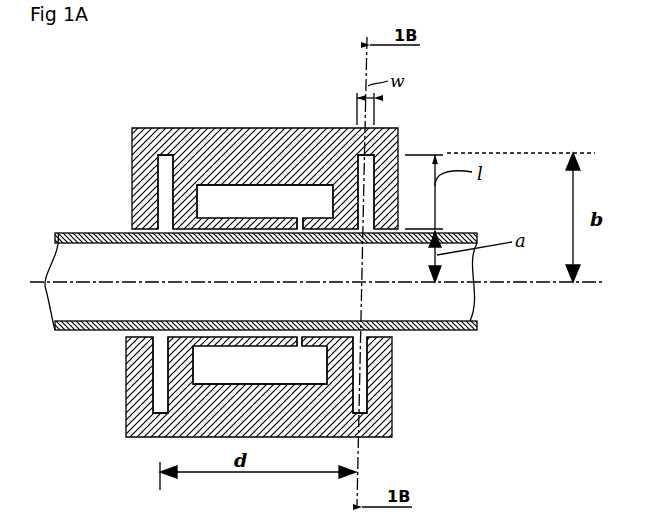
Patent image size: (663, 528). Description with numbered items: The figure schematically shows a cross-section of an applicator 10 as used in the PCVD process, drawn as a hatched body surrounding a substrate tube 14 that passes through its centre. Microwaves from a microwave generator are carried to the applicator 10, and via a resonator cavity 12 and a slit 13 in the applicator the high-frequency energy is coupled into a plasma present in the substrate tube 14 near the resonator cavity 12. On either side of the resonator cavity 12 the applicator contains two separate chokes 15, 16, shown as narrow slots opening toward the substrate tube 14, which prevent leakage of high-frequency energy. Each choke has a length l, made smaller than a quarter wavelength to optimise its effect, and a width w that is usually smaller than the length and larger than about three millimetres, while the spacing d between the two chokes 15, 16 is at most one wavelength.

The applicator 10 is at (192, 113).
The resonator cavity 12 is at (257, 198).
The slit 13 is at (300, 220).
The substrate tube 14 is at (460, 331).
The choke 15 is at (398, 128).
The choke 16 is at (163, 188).